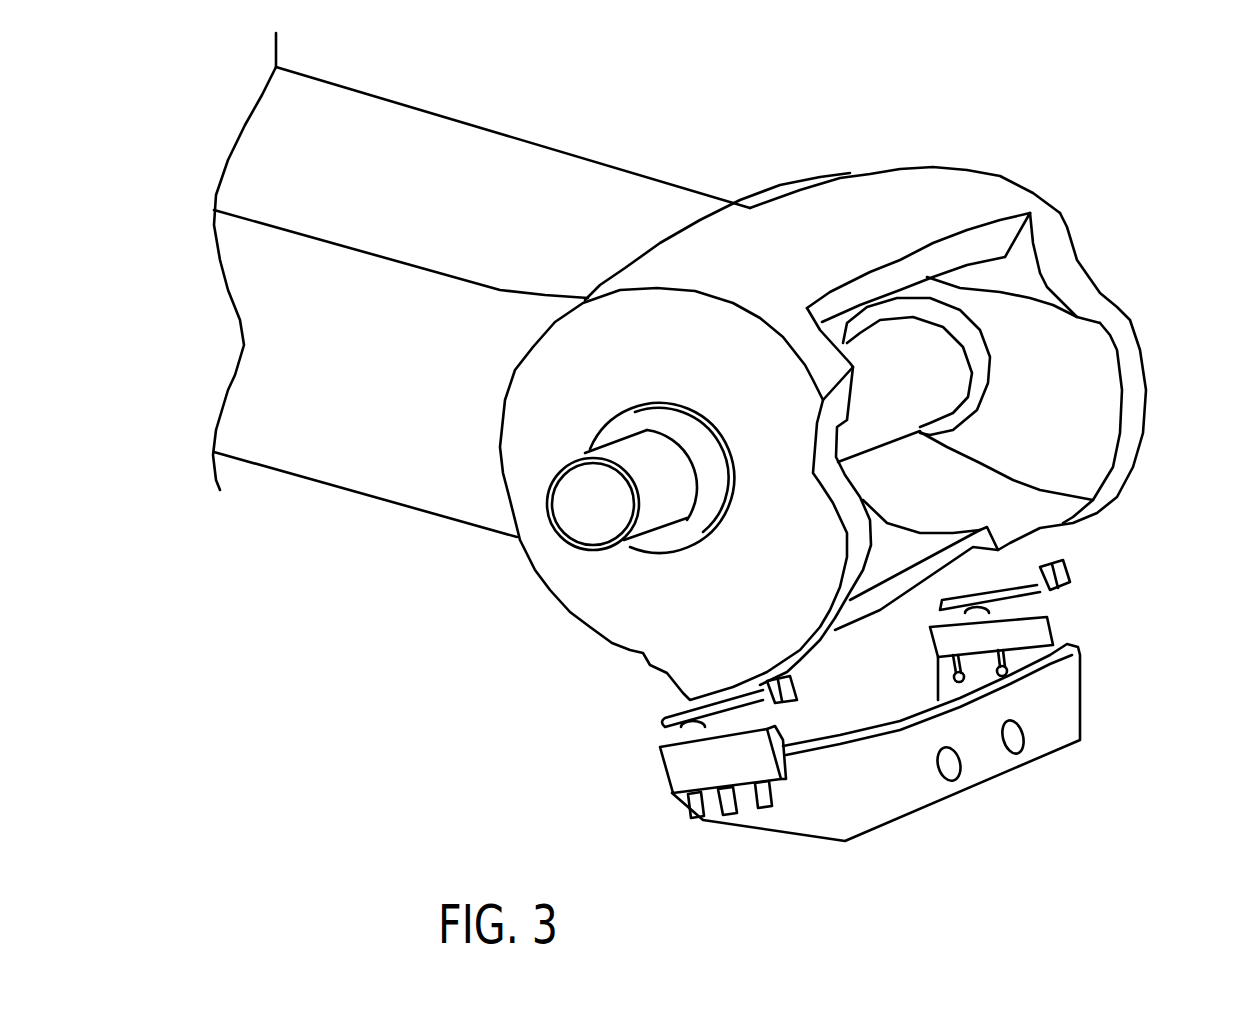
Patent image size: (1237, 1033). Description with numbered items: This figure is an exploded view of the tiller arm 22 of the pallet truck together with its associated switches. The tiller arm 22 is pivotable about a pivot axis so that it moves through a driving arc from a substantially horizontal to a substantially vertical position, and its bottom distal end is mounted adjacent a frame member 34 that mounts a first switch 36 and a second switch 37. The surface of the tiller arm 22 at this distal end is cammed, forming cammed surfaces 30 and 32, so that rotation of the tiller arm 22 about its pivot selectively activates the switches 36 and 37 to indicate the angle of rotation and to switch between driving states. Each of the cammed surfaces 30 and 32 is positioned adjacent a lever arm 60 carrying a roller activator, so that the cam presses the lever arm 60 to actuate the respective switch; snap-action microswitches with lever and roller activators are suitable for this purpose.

The tiller arm 22 is at (347, 85).
The cammed surface 30 is at (1146, 388).
The cammed surface 32 is at (826, 640).
The frame member 34 is at (965, 790).
The first switch 36 is at (663, 733).
The second switch 37 is at (1027, 602).
The lever arm 60 is at (680, 712).